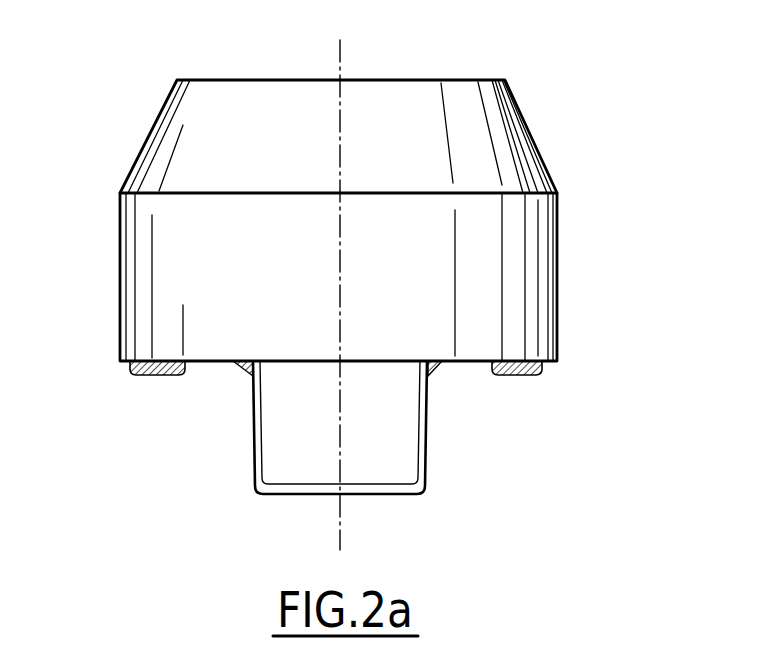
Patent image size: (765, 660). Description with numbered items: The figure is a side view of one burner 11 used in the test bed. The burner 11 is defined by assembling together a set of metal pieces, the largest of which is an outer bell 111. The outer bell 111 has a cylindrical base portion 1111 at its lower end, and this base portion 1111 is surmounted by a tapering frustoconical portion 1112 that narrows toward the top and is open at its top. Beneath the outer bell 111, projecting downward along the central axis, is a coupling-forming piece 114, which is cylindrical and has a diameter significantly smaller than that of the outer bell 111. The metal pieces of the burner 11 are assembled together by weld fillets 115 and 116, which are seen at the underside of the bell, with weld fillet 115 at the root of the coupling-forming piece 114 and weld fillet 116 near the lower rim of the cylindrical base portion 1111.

The burner 11 is at (350, 275).
The outer bell 111 is at (176, 150).
The tapering frustoconical portion 1112 is at (273, 117).
The cylindrical base portion 1111 is at (150, 303).
The coupling-forming piece 114 is at (283, 442).
The weld fillet 115 is at (436, 368).
The weld fillet 116 is at (141, 371).